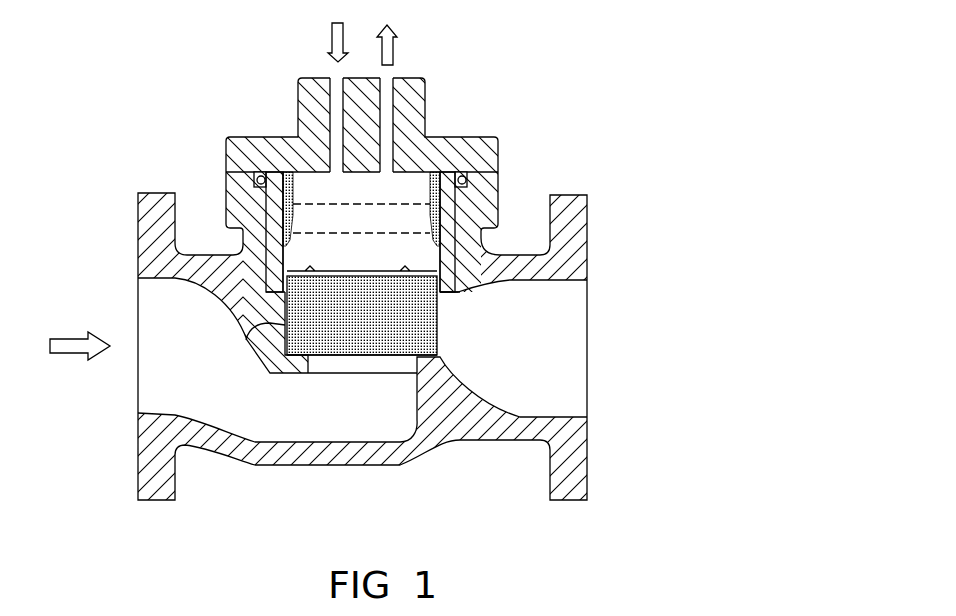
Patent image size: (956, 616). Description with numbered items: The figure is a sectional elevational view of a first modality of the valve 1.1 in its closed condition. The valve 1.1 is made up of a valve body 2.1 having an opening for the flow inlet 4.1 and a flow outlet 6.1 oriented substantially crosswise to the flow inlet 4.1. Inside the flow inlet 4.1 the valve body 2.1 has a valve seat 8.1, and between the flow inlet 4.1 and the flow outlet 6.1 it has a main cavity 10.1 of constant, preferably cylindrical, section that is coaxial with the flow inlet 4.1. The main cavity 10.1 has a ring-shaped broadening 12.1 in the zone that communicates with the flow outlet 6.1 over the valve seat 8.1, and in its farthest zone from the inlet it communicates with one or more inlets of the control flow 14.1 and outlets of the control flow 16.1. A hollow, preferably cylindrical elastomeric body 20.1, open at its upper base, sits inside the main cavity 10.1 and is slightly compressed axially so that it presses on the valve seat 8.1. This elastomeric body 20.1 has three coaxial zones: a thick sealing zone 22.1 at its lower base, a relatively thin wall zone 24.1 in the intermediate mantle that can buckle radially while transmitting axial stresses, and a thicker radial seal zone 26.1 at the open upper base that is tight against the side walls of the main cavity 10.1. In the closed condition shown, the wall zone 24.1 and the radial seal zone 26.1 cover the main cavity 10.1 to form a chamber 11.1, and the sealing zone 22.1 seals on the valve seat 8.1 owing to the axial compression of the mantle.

The valve 1.1 is at (515, 168).
The valve body 2.1 is at (212, 200).
The flow inlet 4.1 is at (330, 403).
The flow outlet 6.1 is at (450, 362).
The valve seat 8.1 is at (380, 358).
The main cavity 10.1 is at (442, 293).
The chamber 11.1 is at (437, 187).
The ring-shaped broadening 12.1 is at (240, 345).
The inlet of the control flow 14.1 is at (337, 88).
The outlet of the control flow 16.1 is at (387, 88).
The elastomeric body 20.1 is at (437, 318).
The sealing zone 22.1 is at (437, 337).
The wall zone 24.1 is at (290, 243).
The radial seal zone 26.1 is at (293, 186).